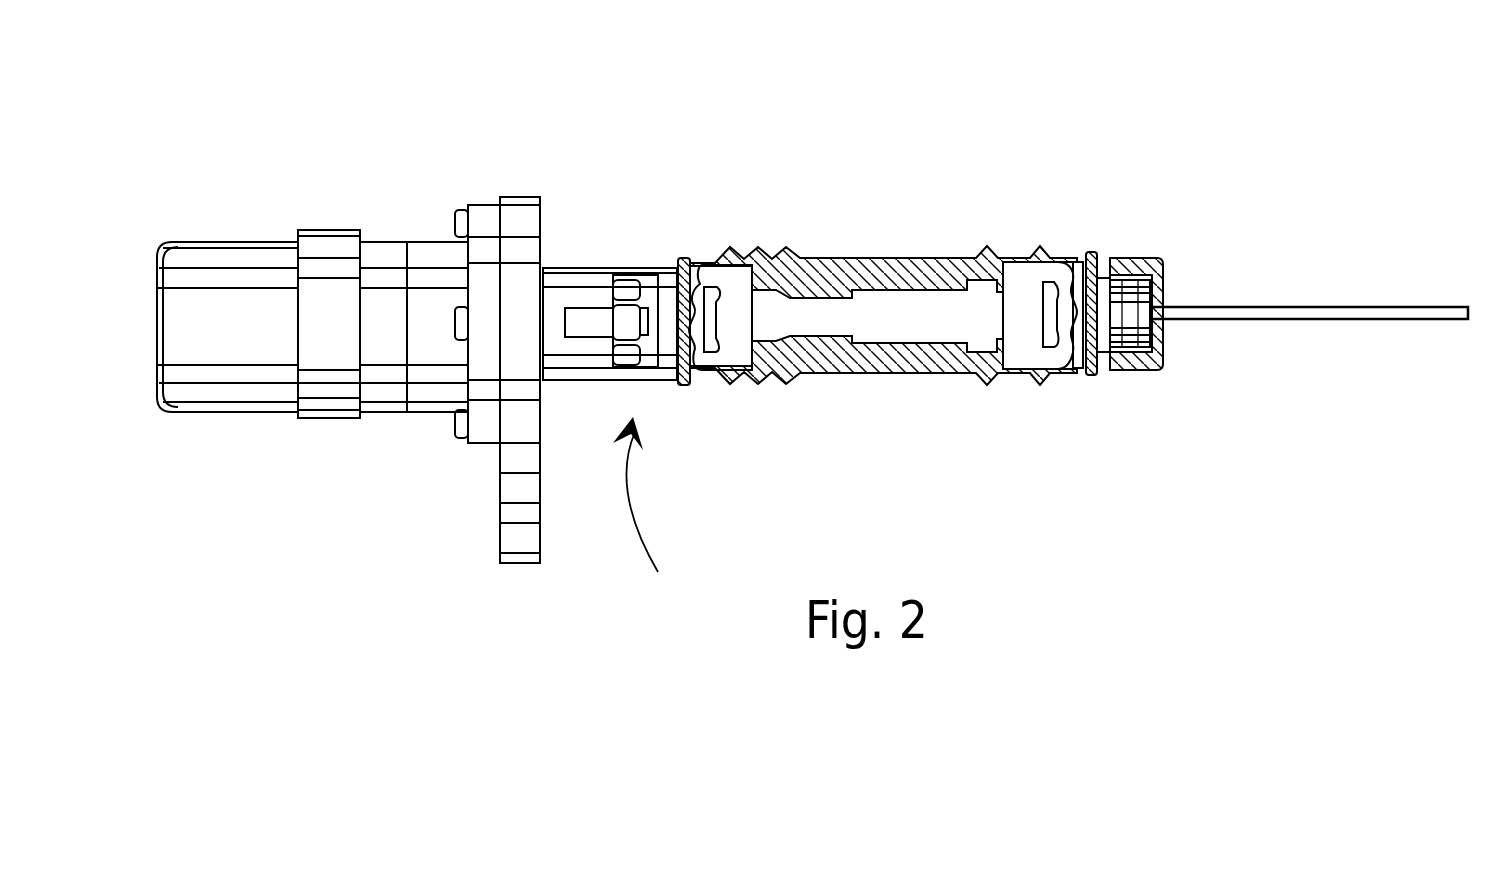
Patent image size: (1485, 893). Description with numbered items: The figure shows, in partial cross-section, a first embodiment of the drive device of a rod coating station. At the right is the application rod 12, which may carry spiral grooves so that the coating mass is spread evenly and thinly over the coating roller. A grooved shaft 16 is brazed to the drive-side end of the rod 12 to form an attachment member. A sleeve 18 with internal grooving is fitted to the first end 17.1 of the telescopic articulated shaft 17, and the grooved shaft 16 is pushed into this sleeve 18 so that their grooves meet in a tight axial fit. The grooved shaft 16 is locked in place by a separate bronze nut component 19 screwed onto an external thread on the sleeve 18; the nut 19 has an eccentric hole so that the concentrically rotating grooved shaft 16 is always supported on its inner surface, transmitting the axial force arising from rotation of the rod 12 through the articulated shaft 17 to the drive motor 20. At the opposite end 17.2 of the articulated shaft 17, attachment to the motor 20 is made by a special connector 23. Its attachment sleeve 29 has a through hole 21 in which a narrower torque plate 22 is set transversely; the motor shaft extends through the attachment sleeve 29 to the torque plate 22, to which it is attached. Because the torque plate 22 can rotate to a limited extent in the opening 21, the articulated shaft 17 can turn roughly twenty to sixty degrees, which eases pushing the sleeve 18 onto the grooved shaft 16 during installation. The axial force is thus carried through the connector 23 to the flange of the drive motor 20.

The application rod 12 is at (1283, 302).
The grooved shaft 16 is at (1133, 338).
The telescopic articulated shaft 17 is at (852, 200).
The first end 17.1 is at (1050, 278).
The opposite end 17.2 is at (738, 282).
The sleeve 18 is at (1098, 293).
The nut component 19 is at (1143, 272).
The drive motor 20 is at (385, 263).
The through hole 21 is at (678, 263).
The torque plate 22 is at (625, 317).
The connector 23 is at (652, 519).
The attachment sleeve 29 is at (632, 267).